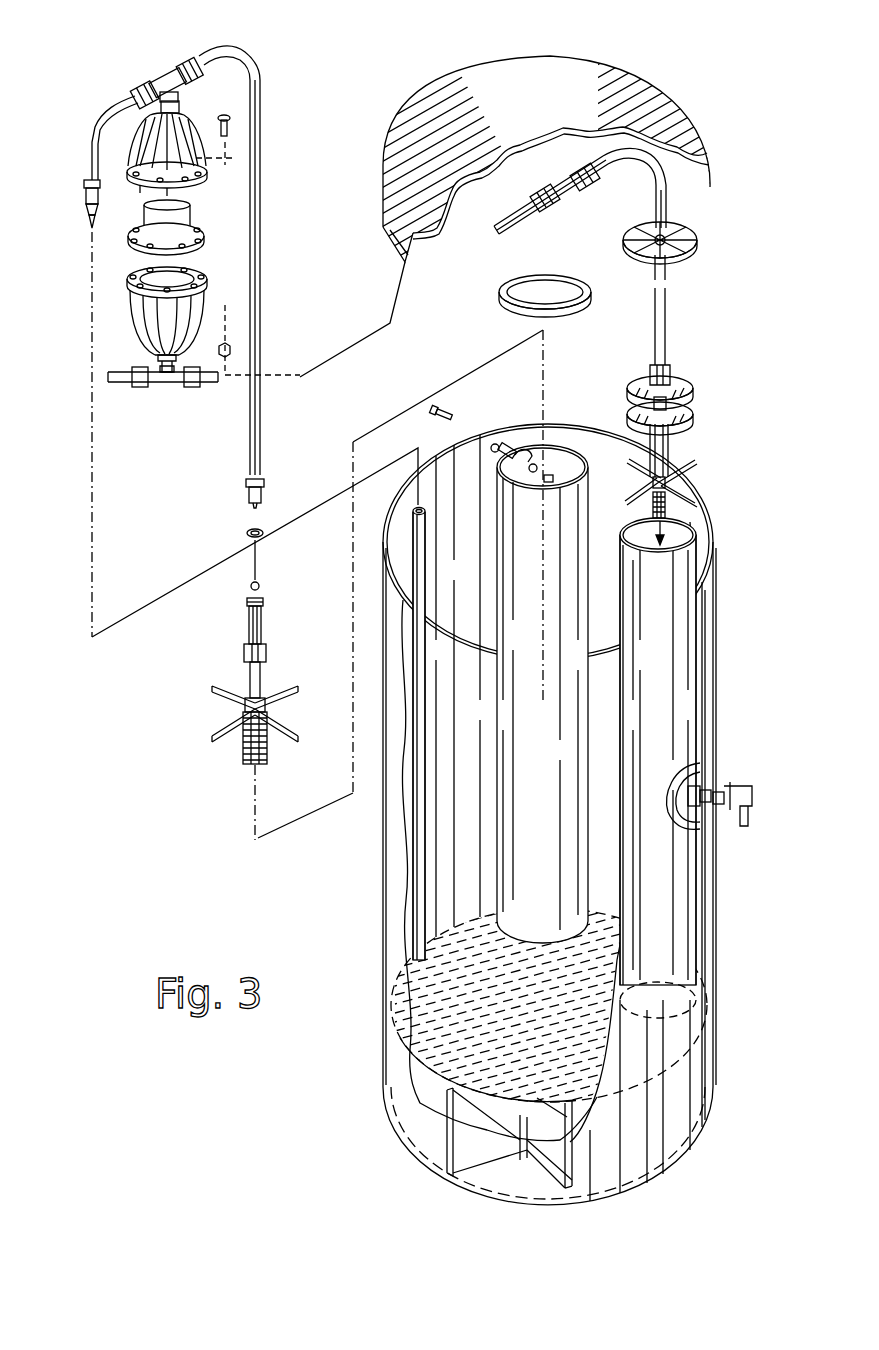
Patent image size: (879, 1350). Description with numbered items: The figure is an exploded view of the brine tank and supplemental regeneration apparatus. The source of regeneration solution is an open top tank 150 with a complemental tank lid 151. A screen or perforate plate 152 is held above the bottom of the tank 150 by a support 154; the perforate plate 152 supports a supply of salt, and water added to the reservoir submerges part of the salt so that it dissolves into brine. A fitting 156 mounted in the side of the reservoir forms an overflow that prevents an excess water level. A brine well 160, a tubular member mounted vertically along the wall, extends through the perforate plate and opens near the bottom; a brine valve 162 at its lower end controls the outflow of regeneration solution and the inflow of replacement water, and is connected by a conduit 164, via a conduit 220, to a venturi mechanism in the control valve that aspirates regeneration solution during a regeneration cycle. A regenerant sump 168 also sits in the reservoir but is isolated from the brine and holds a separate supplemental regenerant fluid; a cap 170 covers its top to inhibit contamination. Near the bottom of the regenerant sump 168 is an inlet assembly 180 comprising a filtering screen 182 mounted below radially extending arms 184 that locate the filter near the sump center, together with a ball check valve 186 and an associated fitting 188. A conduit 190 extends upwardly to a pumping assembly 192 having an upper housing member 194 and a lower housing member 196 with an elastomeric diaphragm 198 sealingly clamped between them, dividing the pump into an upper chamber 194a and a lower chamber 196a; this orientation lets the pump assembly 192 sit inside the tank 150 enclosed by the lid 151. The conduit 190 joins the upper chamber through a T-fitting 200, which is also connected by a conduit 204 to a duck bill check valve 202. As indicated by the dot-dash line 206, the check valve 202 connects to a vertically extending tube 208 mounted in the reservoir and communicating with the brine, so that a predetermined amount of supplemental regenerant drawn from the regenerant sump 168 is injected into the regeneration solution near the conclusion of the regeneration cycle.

The open top tank 150 is at (712, 886).
The tank lid 151 is at (546, 104).
The perforate plate 152 is at (462, 905).
The support 154 is at (565, 1125).
The fitting 156 is at (732, 782).
The brine well 160 is at (690, 560).
The brine valve 162 is at (668, 436).
The conduit 164 is at (668, 208).
The regenerant sump 168 is at (507, 577).
The cap 170 is at (550, 285).
The inlet assembly 180 is at (271, 624).
The filtering screen 182 is at (268, 748).
The radially extending arms 184 is at (284, 698).
The ball check valve 186 is at (268, 612).
The fitting 188 is at (268, 488).
The conduit 190 is at (262, 230).
The pumping assembly 192 is at (228, 172).
The upper housing member 194 is at (194, 140).
The upper chamber 194a is at (195, 196).
The lower housing member 196 is at (203, 300).
The lower chamber 196a is at (150, 289).
The elastomeric diaphragm 198 is at (200, 230).
The T-fitting 200 is at (162, 82).
The check valve 202 is at (84, 196).
The conduit 204 is at (104, 118).
The dot-dash line 206 is at (90, 438).
The vertically extending tube 208 is at (425, 650).
The conduit 220 is at (120, 382).